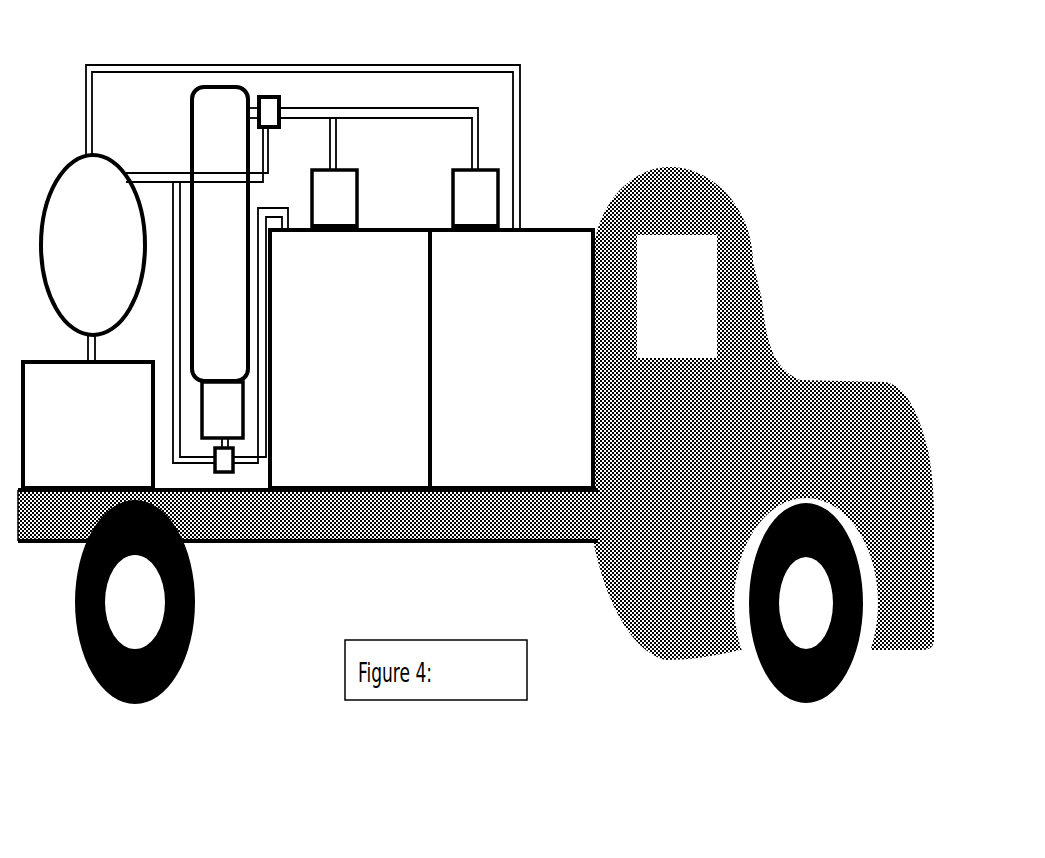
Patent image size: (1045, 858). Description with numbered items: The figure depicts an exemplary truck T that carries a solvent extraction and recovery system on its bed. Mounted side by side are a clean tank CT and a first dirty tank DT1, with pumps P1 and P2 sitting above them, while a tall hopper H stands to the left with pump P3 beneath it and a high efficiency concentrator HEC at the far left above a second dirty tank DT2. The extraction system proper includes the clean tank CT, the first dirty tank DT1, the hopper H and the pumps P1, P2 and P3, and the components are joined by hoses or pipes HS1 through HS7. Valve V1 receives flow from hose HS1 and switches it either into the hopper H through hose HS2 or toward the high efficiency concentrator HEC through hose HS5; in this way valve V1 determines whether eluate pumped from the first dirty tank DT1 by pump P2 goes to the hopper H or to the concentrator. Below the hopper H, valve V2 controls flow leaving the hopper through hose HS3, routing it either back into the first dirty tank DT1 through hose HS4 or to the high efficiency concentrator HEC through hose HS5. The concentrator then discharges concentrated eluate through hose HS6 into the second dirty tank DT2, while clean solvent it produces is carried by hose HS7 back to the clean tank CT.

The truck T is at (642, 540).
The high efficiency concentrator HEC is at (93, 245).
The first dirty tank DT1 is at (350, 359).
The second dirty tank DT2 is at (88, 425).
The clean tank CT is at (511, 359).
The hopper H is at (237, 117).
The valve V1 is at (272, 107).
The valve V2 is at (223, 472).
The pump P1 is at (475, 200).
The pump P2 is at (334, 200).
The pump P3 is at (222, 410).
The hose HS1 is at (382, 118).
The hose HS2 is at (254, 107).
The hose HS3 is at (230, 445).
The hose HS4 is at (248, 463).
The hose HS5 is at (167, 173).
The hose HS6 is at (88, 350).
The hose HS7 is at (520, 130).